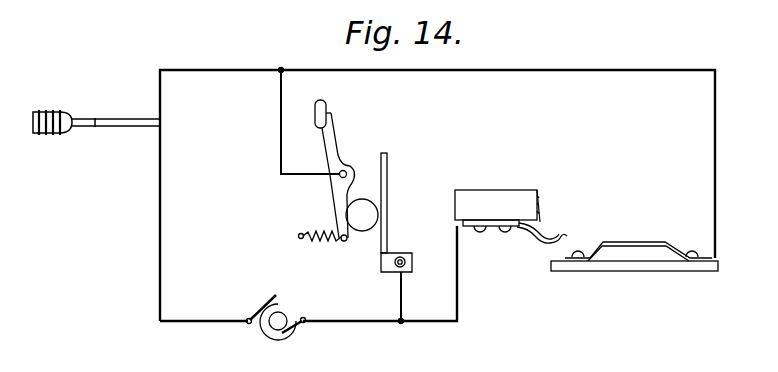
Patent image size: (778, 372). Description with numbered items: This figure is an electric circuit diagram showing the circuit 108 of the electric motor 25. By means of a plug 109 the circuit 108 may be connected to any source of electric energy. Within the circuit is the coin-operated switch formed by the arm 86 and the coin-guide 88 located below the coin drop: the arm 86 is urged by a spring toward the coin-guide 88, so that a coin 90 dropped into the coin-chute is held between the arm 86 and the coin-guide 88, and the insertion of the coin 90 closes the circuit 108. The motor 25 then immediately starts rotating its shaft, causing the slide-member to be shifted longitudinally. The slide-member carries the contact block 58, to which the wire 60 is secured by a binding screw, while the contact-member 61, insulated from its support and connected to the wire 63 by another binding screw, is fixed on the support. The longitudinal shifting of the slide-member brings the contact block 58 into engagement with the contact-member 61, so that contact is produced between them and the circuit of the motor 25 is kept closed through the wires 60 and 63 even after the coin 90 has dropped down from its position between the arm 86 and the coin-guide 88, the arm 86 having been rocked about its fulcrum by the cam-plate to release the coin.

The circuit 108 is at (548, 71).
The plug 109 is at (60, 135).
The arm 86 is at (335, 196).
The coin 90 is at (368, 222).
The coin-guide 88 is at (387, 167).
The wire 60 is at (457, 285).
The contact block 58 is at (529, 239).
The wire 63 is at (652, 228).
The contact-member 61 is at (633, 242).
The electric motor 25 is at (265, 332).